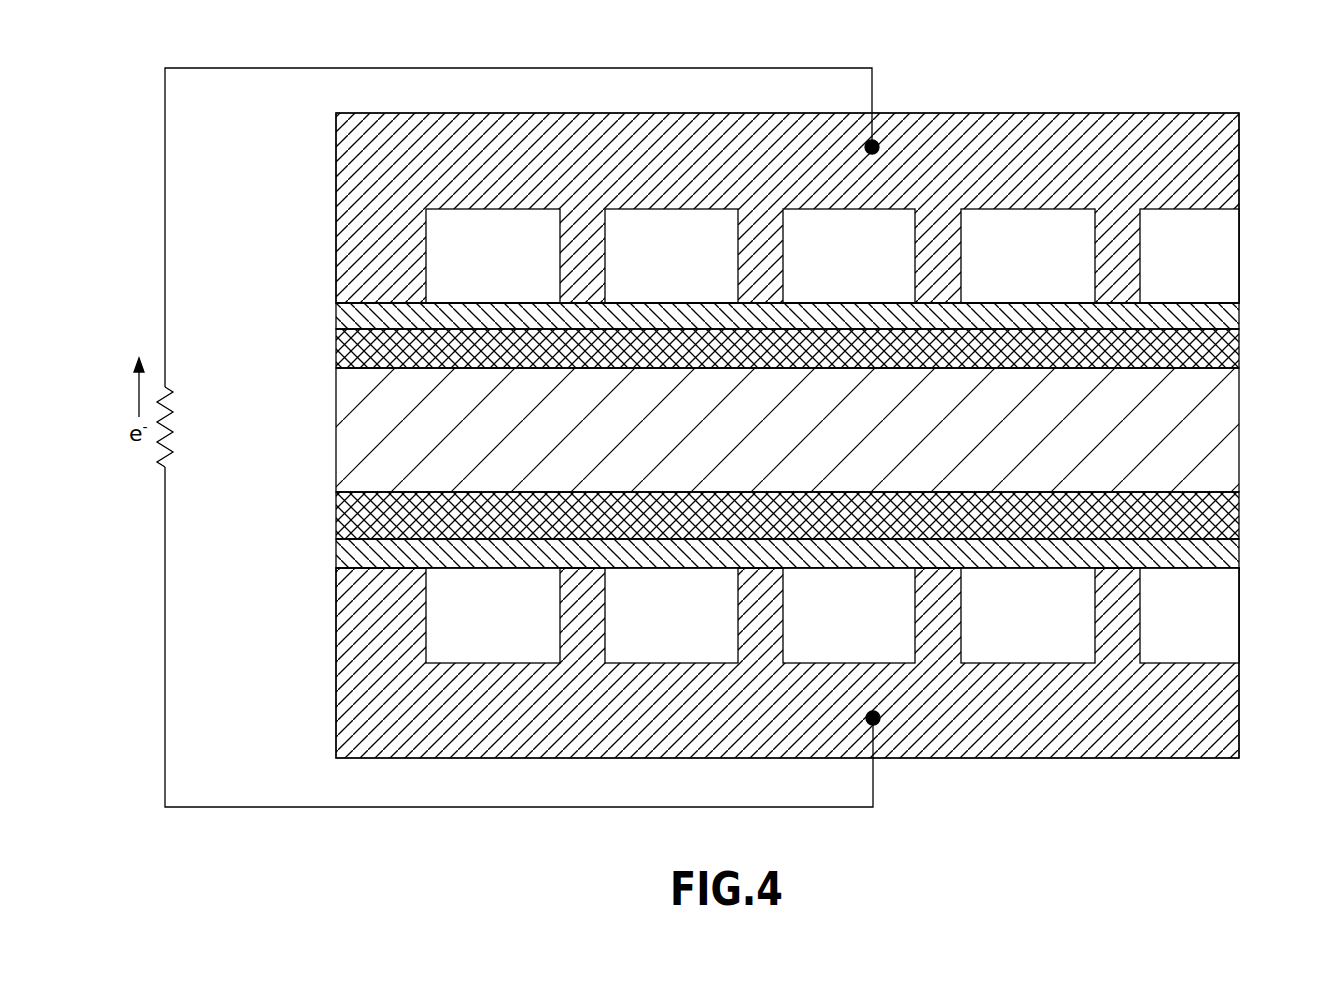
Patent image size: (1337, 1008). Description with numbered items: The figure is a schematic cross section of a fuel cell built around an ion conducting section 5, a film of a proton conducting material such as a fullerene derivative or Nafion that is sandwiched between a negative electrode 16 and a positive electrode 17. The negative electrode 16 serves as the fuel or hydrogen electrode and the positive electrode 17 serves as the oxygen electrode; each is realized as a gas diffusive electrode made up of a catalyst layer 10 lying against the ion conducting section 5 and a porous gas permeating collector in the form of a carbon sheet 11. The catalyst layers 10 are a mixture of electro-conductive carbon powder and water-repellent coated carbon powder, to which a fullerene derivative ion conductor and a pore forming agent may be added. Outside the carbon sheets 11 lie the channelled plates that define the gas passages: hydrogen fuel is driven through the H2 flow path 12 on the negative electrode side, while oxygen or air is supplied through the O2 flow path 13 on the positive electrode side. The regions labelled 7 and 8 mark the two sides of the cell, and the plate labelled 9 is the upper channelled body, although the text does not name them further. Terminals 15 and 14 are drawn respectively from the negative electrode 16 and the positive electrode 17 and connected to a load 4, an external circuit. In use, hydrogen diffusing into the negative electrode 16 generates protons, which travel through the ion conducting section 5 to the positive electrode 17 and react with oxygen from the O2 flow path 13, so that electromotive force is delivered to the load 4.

The load 4 is at (169, 440).
The ion conducting section 5 is at (1215, 428).
The anode side 7 is at (831, 696).
The cathode side 8 is at (789, 175).
The upper separator plate 9 is at (1213, 143).
The catalyst layer 10 is at (346, 350).
The carbon sheet 11 is at (346, 318).
The H2 flow path 12 is at (1215, 637).
The O2 flow path 13 is at (445, 247).
The terminal 14 is at (878, 143).
The terminal 15 is at (880, 723).
The negative electrode 16 is at (1245, 492).
The positive electrode 17 is at (1245, 303).